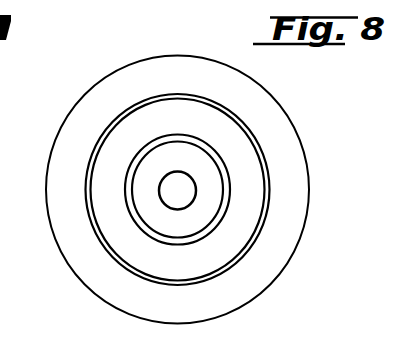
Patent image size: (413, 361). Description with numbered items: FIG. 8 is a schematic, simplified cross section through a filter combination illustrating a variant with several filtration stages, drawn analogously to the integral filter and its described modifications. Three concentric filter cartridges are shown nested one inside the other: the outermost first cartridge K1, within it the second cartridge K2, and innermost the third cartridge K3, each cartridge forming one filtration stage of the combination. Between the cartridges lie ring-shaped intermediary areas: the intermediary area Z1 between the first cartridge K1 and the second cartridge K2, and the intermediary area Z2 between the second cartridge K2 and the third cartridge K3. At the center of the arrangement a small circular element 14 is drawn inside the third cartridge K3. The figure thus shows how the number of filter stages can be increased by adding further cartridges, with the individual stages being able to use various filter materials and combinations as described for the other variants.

The cartridge 1 K1 is at (113, 84).
The cartridge 2 K2 is at (115, 144).
The cartridge 3 K3 is at (138, 182).
The intermediary area Z1 is at (88, 170).
The intermediary area Z2 is at (125, 192).
The central bore / shaft 14 is at (167, 193).